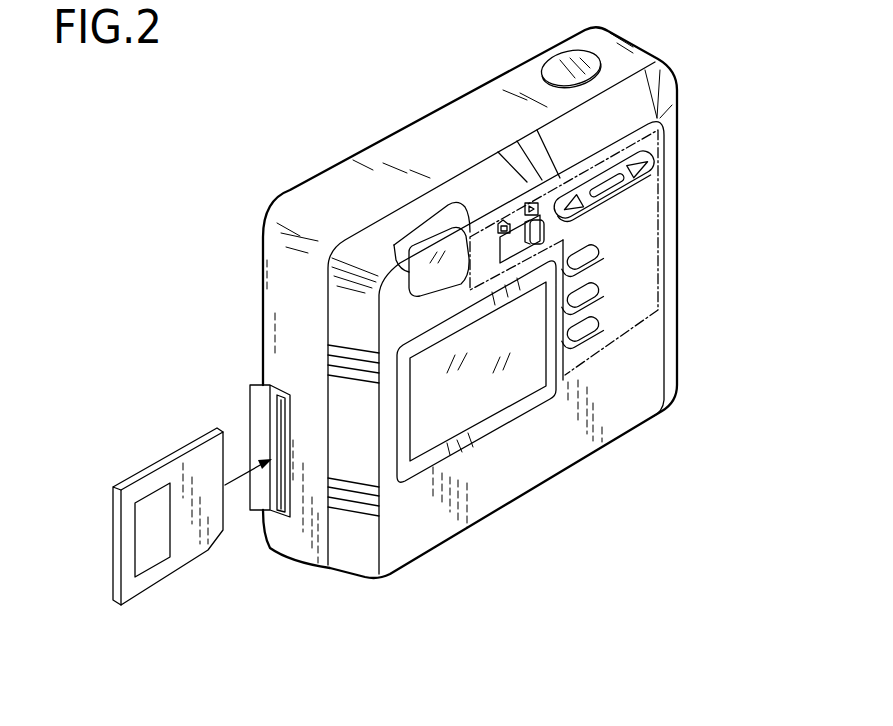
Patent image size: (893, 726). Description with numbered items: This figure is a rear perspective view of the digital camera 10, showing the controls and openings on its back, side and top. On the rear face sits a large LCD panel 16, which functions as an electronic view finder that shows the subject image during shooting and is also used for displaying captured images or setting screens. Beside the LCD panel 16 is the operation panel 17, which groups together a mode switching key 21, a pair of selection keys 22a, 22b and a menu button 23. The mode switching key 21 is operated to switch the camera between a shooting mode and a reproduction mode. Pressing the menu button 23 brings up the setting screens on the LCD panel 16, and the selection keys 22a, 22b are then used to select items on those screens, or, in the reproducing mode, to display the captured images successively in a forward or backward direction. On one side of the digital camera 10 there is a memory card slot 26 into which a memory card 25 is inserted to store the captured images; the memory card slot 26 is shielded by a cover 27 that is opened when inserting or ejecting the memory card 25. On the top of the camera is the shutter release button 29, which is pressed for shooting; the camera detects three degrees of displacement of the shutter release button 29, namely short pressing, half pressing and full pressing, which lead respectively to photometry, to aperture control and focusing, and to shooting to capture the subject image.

The digital camera 10 is at (337, 137).
The LCD panel 16 is at (473, 413).
The operation panel 17 is at (423, 270).
The mode switching key 21 is at (527, 235).
The selection key 22a is at (600, 256).
The selection key 22b is at (599, 293).
The menu button 23 is at (599, 328).
The memory card 25 is at (170, 458).
The memory card slot 26 is at (279, 395).
The cover 27 is at (258, 398).
The shutter release button 29 is at (558, 64).